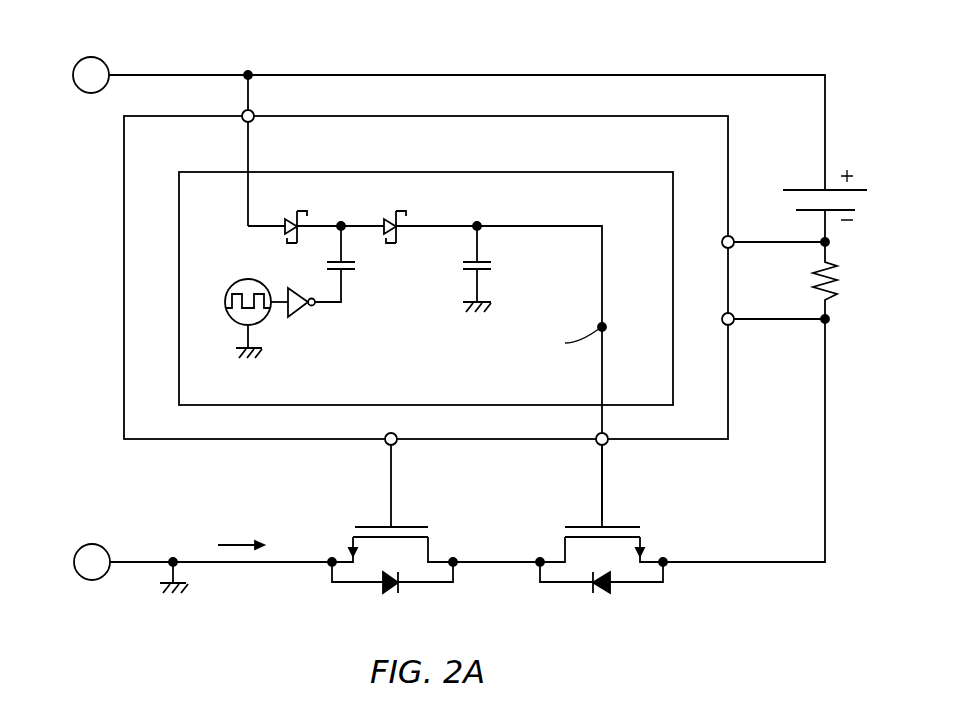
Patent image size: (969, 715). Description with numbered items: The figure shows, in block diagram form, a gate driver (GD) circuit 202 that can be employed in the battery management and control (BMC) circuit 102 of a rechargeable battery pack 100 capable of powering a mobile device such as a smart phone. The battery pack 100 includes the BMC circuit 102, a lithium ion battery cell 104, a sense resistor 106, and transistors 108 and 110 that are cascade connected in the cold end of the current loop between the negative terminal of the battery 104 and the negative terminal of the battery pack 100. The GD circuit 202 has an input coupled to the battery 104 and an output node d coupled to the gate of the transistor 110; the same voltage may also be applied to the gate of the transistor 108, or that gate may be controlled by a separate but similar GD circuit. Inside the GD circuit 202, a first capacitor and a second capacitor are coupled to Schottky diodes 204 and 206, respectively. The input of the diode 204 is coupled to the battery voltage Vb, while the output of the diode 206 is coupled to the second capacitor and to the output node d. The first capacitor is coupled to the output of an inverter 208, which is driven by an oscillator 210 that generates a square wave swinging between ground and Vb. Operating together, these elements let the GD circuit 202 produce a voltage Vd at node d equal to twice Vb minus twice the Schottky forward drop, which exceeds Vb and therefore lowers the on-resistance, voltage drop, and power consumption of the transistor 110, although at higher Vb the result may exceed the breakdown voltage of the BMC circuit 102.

The rechargeable battery pack 100 is at (838, 39).
The battery management and control circuit 102 is at (712, 155).
The lithium ion battery cell 104 is at (803, 188).
The sense resistor 106 is at (815, 283).
The transistor 108 is at (412, 523).
The transistor 110 is at (627, 523).
The gate driver circuit 202 is at (657, 202).
The Schottky diode 204 is at (283, 216).
The Schottky diode 206 is at (382, 216).
The inverter 208 is at (313, 307).
The oscillator 210 is at (247, 280).